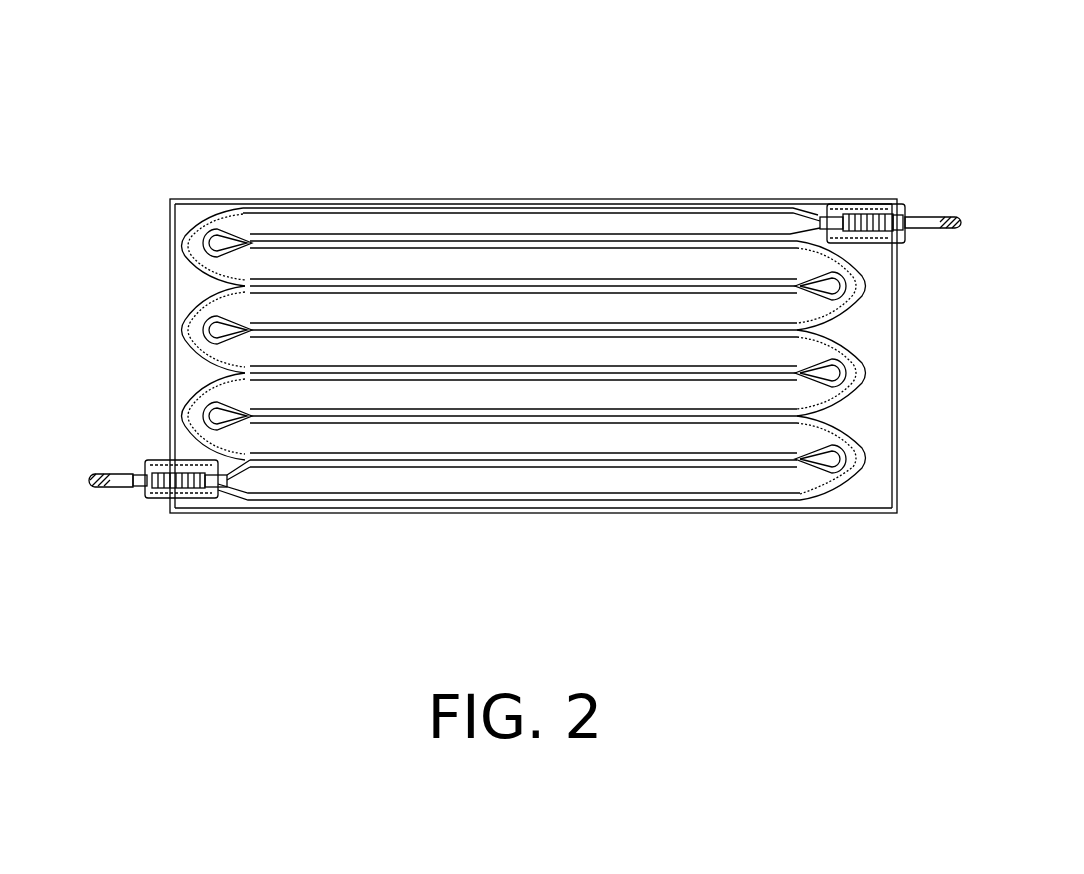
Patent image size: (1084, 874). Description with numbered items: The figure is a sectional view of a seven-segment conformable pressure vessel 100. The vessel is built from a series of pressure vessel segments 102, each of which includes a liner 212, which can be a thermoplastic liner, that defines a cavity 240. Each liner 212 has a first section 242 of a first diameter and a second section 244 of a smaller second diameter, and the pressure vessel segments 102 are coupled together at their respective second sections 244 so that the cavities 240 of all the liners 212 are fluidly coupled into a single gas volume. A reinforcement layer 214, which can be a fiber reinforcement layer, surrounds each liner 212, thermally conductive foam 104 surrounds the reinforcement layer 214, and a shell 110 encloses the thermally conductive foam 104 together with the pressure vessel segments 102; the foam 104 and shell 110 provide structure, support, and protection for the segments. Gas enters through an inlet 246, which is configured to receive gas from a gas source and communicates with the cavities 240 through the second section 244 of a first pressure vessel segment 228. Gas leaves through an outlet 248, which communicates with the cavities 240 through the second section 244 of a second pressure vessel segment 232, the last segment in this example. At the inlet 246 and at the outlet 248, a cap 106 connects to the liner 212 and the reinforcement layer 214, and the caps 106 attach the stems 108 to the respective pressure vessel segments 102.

The conformable pressure vessel 100 is at (345, 80).
The pressure vessel segment 102 is at (435, 373).
The thermally conductive foam 104 is at (880, 472).
The cap 106 is at (835, 212).
The stem 108 is at (935, 216).
The shell 110 is at (805, 513).
The liner 212 is at (433, 209).
The reinforcement layer 214 is at (210, 208).
The first pressure vessel segment 228 is at (544, 499).
The second pressure vessel segment 232 is at (537, 199).
The cavity 240 is at (631, 222).
The first section 242 is at (327, 253).
The second section 244 is at (197, 313).
The inlet 246 is at (240, 490).
The outlet 248 is at (800, 205).